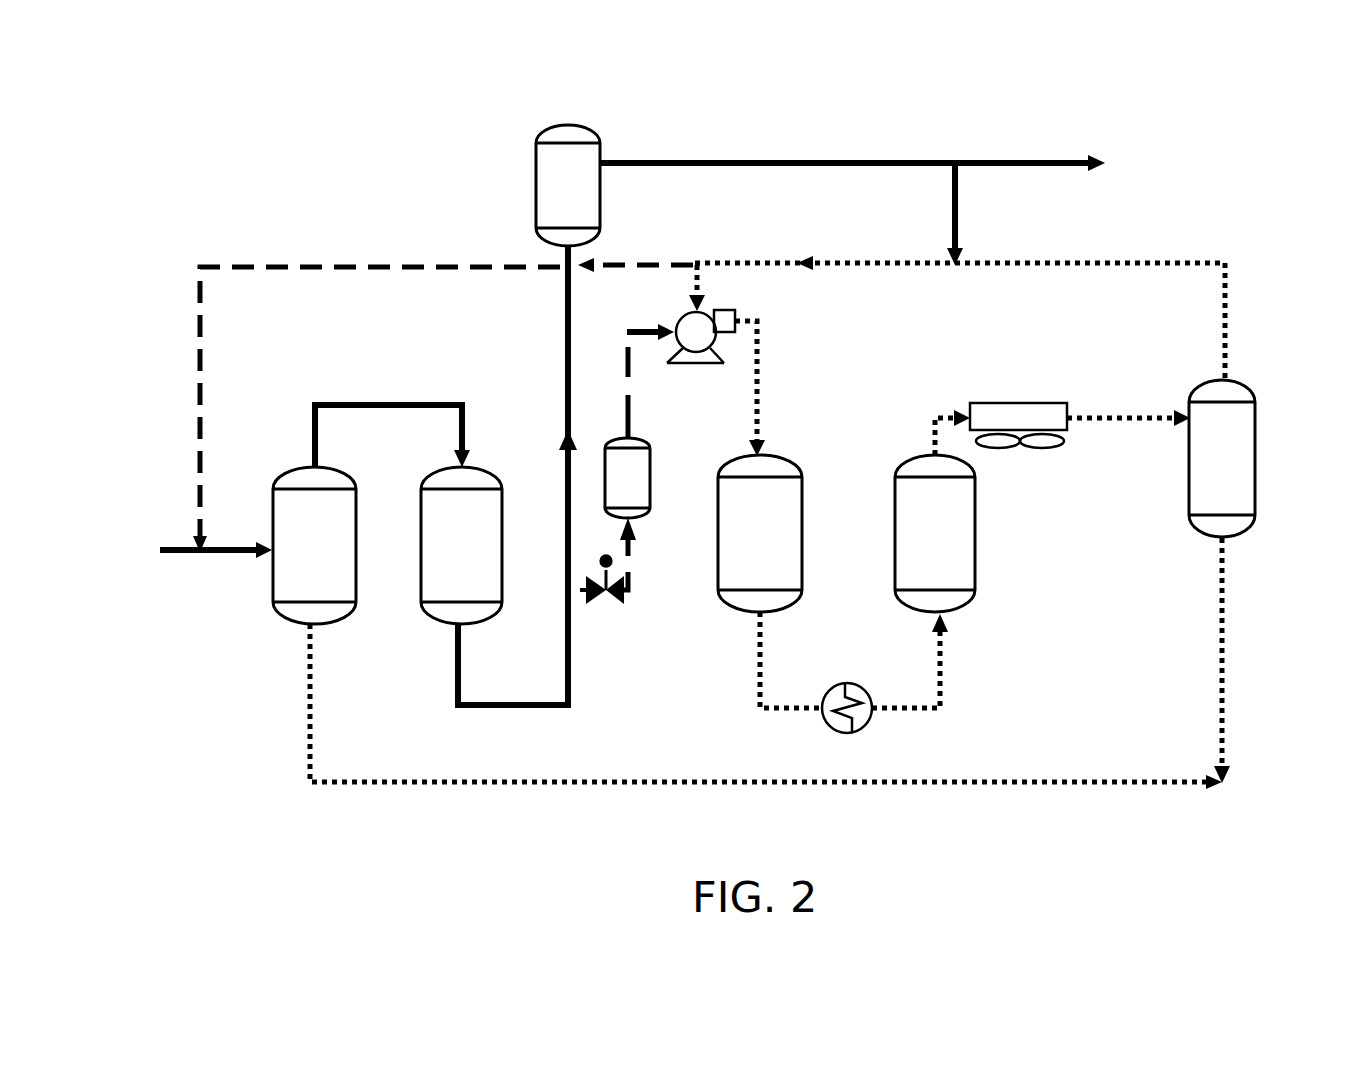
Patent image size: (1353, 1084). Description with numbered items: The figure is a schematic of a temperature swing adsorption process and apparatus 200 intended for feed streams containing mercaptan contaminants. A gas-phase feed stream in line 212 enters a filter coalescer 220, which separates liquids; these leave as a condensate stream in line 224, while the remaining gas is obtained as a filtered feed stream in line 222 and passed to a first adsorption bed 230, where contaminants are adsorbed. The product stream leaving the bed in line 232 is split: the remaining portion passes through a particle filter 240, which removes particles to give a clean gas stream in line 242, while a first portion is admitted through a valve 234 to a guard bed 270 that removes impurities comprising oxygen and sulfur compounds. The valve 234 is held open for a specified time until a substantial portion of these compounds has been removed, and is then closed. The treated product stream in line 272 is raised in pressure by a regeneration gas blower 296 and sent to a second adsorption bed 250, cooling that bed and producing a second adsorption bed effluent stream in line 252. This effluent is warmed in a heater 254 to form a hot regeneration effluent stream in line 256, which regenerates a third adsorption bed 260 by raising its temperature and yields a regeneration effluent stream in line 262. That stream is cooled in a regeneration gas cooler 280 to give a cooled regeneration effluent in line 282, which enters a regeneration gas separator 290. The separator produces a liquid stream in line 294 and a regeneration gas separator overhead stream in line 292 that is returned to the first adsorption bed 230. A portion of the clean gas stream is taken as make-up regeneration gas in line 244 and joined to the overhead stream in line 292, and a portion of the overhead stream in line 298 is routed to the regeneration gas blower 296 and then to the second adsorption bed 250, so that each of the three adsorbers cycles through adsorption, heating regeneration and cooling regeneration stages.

The process and apparatus 200 is at (210, 128).
The feed stream line 212 is at (228, 553).
The filter coalescer 220 is at (290, 561).
The filtered feed stream line 222 is at (384, 405).
The condensate stream line 224 is at (310, 700).
The first adsorption bed 230 is at (438, 561).
The product stream line 232 is at (457, 678).
The valve 234 is at (614, 598).
The particle filter 240 is at (545, 199).
The clean gas stream line 242 is at (683, 163).
The make-up regeneration gas line 244 is at (957, 215).
The second adsorption bed 250 is at (737, 546).
The second adsorption bed effluent stream line 252 is at (760, 660).
The heater 254 is at (862, 730).
The hot regeneration effluent stream line 256 is at (943, 655).
The third adsorption bed 260 is at (912, 541).
The regeneration effluent stream line 262 is at (935, 445).
The guard bed 270 is at (650, 493).
The treated product stream line 272 is at (630, 380).
The regeneration gas cooler 280 is at (1019, 405).
The cooled regeneration effluent line 282 is at (1105, 418).
The regeneration gas separator 290 is at (1199, 474).
The regeneration gas separator overhead stream line 292 is at (1085, 262).
The liquid stream line 294 is at (1223, 640).
The regeneration gas blower 296 is at (760, 320).
The regeneration gas separator overhead portion line 298 is at (700, 275).